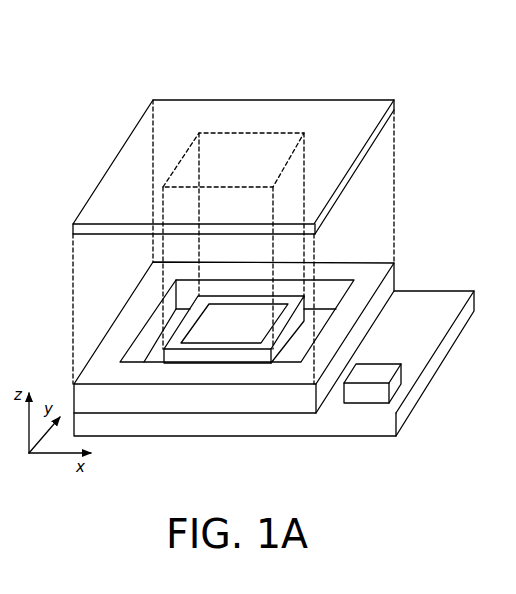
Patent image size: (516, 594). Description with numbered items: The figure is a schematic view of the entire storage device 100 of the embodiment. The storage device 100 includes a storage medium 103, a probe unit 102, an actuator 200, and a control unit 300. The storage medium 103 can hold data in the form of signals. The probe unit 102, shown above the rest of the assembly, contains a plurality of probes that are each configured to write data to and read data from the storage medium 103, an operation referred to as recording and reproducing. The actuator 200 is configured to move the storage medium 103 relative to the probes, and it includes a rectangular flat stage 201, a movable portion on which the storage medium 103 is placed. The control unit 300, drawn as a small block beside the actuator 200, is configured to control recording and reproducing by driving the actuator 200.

The storage device 100 is at (394, 57).
The probe unit 102 is at (272, 123).
The storage medium 103 is at (227, 323).
The actuator 200 is at (130, 333).
The rectangular flat stage (movable-portion) 201 is at (250, 347).
The control unit 300 is at (377, 387).